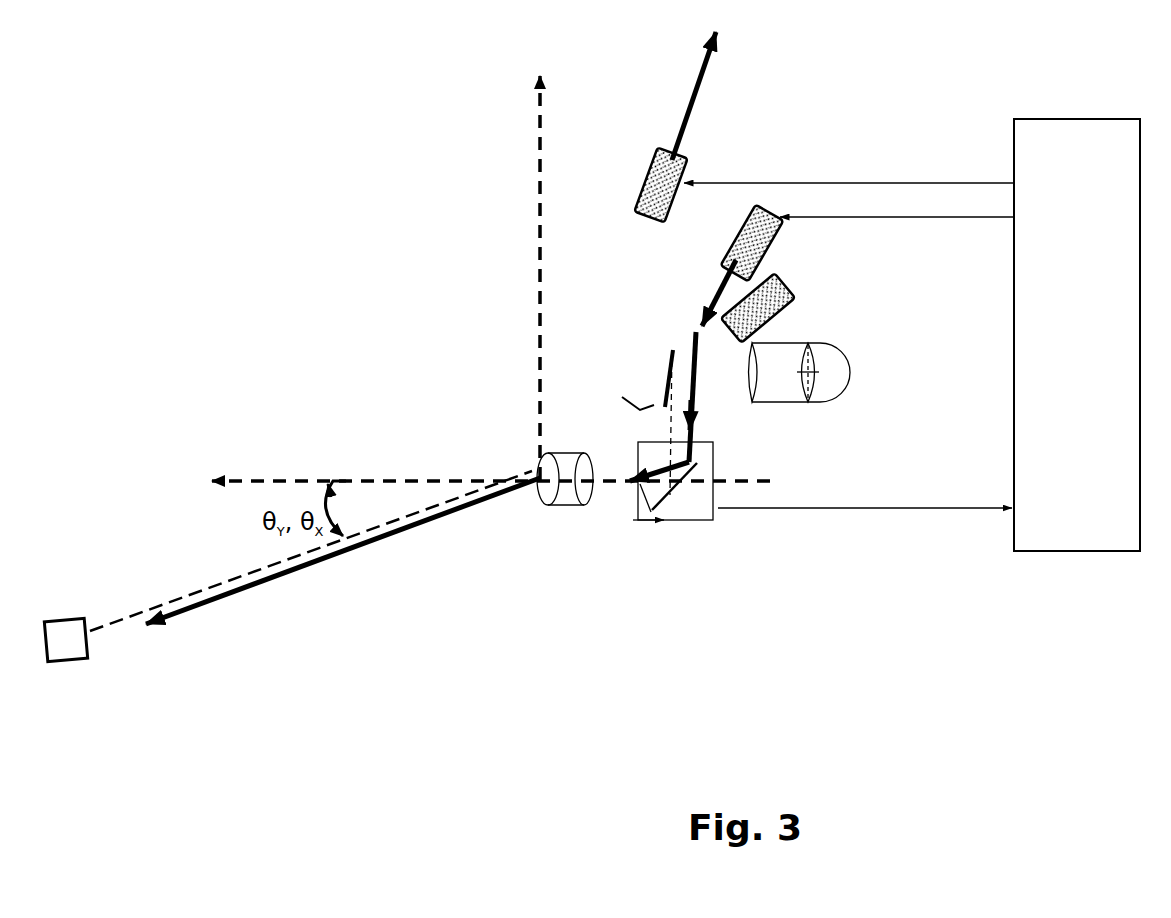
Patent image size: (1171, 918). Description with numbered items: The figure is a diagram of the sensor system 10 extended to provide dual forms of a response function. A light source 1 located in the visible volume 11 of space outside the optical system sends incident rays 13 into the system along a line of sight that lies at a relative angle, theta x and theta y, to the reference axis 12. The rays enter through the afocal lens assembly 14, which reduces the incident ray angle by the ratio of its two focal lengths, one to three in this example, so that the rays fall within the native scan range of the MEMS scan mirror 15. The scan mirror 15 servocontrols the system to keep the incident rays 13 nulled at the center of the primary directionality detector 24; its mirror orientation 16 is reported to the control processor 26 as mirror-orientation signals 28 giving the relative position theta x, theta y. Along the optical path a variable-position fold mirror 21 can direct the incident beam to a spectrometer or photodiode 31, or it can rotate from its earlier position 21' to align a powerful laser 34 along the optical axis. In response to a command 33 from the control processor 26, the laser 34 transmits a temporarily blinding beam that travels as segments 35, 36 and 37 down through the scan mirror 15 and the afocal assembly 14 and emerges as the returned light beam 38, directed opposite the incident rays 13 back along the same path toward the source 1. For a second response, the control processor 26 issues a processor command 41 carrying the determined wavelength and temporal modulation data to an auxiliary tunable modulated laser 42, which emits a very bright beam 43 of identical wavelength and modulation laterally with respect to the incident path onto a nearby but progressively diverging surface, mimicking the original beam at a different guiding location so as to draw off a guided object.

The light source 1 is at (65, 639).
The sensor system 10 is at (921, 630).
The visible volume 11 is at (227, 462).
The reference axis 12 is at (440, 479).
The incident rays 13 is at (311, 551).
The afocal lens assembly 14 is at (562, 509).
The MEMS scan mirror 15 is at (675, 494).
The mirror orientation 16 is at (632, 520).
The fold mirror 21 is at (642, 410).
The earlier fold mirror position 21' is at (630, 390).
The primary directionality detector 24 is at (811, 367).
The control processor 26 is at (1059, 349).
The mirror-orientation signals 28 is at (865, 523).
The spectrometer or photodiode 31 is at (772, 306).
The command 33 is at (897, 203).
The powerful laser 34 is at (746, 243).
The laser beam segment 35 is at (699, 293).
The laser beam segment 36 is at (713, 397).
The laser beam segment 37 is at (648, 463).
The returned light beam 38 is at (333, 566).
The processor command 41 is at (849, 170).
The auxiliary laser 42 is at (650, 185).
The bright beam 43 is at (687, 94).